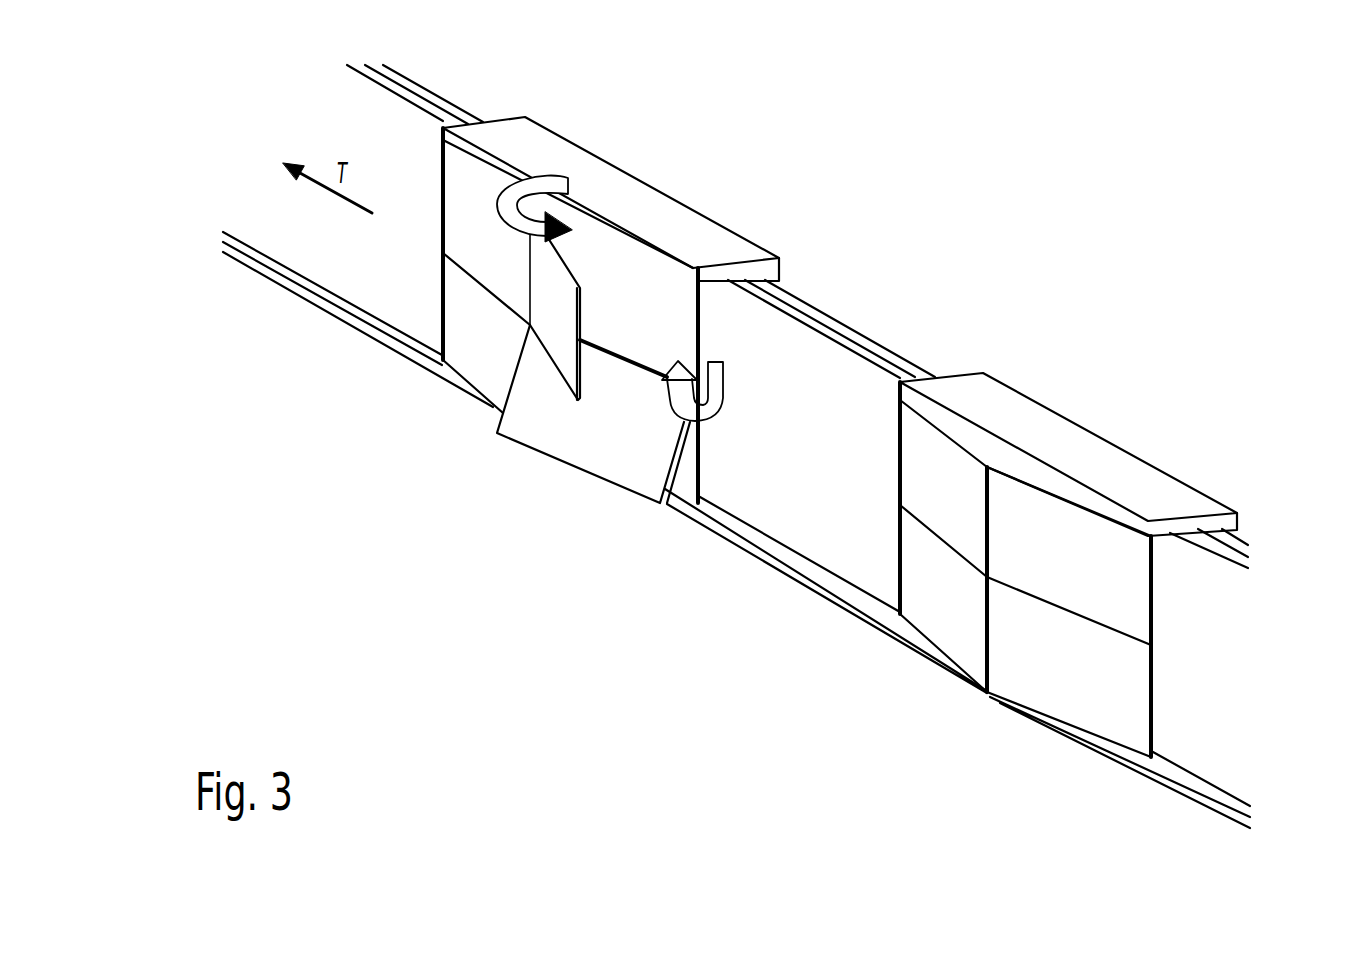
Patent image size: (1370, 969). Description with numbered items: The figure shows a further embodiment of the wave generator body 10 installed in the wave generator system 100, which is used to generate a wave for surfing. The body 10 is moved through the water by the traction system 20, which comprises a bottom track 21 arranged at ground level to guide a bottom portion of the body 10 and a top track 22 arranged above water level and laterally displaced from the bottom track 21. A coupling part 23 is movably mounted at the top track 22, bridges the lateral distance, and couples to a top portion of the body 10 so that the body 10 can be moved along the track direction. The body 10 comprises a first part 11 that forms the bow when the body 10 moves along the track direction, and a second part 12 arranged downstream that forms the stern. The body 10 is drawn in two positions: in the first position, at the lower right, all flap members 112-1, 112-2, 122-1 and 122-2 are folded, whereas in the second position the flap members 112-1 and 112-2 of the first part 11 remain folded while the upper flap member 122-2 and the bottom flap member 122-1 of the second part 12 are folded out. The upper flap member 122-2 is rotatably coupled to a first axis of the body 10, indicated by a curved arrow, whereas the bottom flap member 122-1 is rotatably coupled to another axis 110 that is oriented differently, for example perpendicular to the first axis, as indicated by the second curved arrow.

The wave generator system 100 is at (912, 160).
The wave generator body 10 is at (476, 450).
The first part 11 is at (491, 433).
The second part 12 is at (492, 438).
The second axis 110 is at (620, 353).
The flap member 112-1 is at (715, 472).
The flap member 112-2 is at (715, 352).
The bottom flap member 122-1 is at (824, 541).
The upper flap member 122-2 is at (554, 303).
The traction system 20 is at (1260, 545).
The bottom track 21 is at (1220, 803).
The top track 22 is at (1240, 550).
The coupling part 23 is at (677, 223).